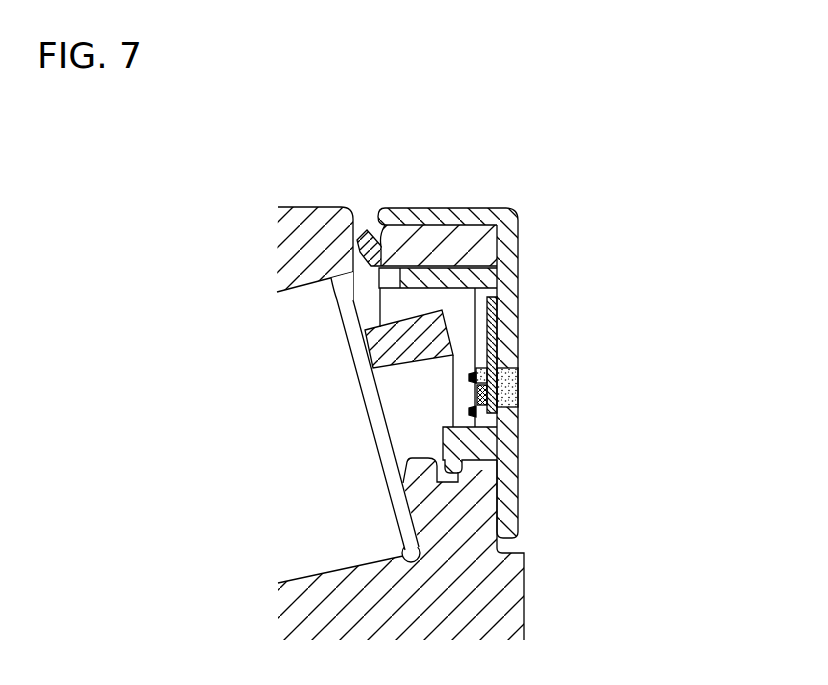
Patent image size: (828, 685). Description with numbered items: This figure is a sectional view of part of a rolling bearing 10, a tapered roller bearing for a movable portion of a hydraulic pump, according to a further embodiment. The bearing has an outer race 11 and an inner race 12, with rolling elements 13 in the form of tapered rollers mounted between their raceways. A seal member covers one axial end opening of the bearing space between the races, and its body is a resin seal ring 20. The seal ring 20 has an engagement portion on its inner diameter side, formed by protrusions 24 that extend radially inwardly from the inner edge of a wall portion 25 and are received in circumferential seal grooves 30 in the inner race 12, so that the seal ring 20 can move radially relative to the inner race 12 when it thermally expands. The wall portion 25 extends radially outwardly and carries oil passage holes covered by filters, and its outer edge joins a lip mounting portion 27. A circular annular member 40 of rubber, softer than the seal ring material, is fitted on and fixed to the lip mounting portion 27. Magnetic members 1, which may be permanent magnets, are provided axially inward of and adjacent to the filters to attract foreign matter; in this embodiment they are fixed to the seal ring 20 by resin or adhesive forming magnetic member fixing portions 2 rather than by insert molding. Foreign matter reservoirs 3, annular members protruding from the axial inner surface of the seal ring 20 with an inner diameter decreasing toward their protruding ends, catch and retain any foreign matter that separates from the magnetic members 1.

The magnetic member 1 is at (476, 398).
The magnetic member fixing portion 2 is at (516, 388).
The foreign matter reservoir 3 is at (472, 377).
The rolling bearing 10 is at (268, 205).
The outer race 11 is at (302, 230).
The inner race 12 is at (490, 587).
The rolling element 13 is at (313, 313).
The seal ring 20 is at (523, 443).
The protrusion 24 is at (497, 522).
The wall portion 25 is at (503, 280).
The lip mounting portion 27 is at (468, 200).
The seal groove 30 is at (440, 480).
The circular annular member 40 is at (412, 232).